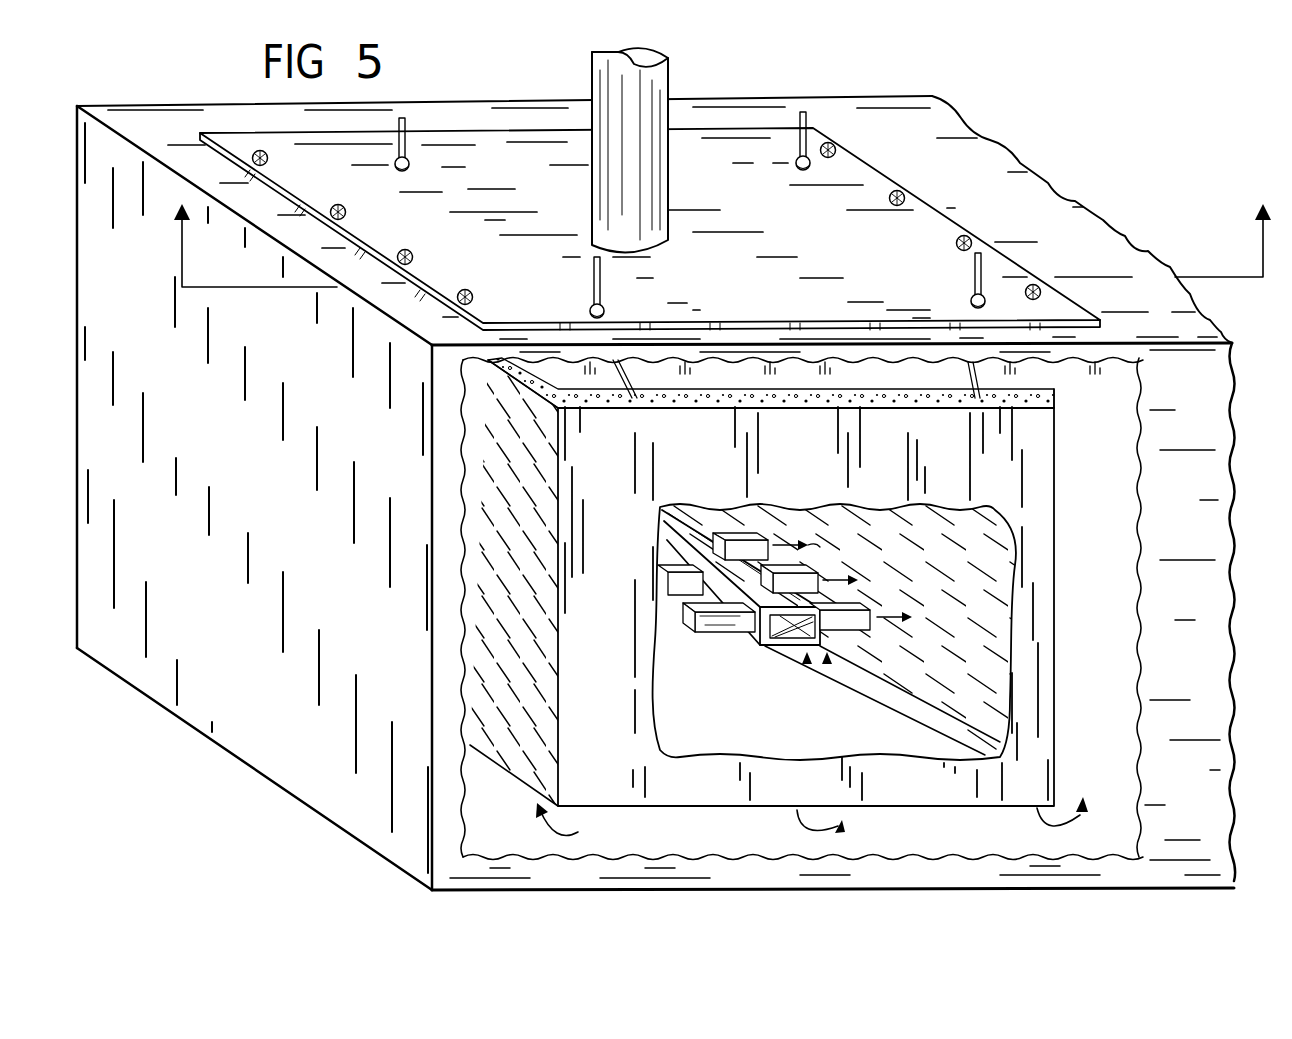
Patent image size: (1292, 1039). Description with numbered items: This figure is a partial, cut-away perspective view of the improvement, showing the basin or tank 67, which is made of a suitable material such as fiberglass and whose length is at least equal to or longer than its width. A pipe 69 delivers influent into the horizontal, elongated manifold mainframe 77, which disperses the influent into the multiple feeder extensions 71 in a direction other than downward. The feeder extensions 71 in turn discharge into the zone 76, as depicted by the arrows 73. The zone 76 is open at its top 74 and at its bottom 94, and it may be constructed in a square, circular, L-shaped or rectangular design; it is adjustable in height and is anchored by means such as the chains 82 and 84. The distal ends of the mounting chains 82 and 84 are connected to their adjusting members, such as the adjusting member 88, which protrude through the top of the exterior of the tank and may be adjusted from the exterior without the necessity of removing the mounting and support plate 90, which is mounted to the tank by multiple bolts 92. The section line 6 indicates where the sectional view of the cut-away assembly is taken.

The section line 6- 6 is at (722, 229).
The basin or tank 67 is at (656, 493).
The pipe 69 is at (665, 186).
The feeder extensions 71 is at (708, 632).
The arrows 73 is at (836, 581).
The top 74 is at (791, 392).
The zone 76 is at (1048, 691).
The manifold mainframe 77 is at (692, 531).
The chain 82 is at (966, 383).
The chain 84 is at (622, 369).
The adjusting member 88 is at (808, 164).
The mounting and support plate 90 is at (650, 229).
The bolts 92 is at (472, 294).
The bottom 94 is at (578, 832).